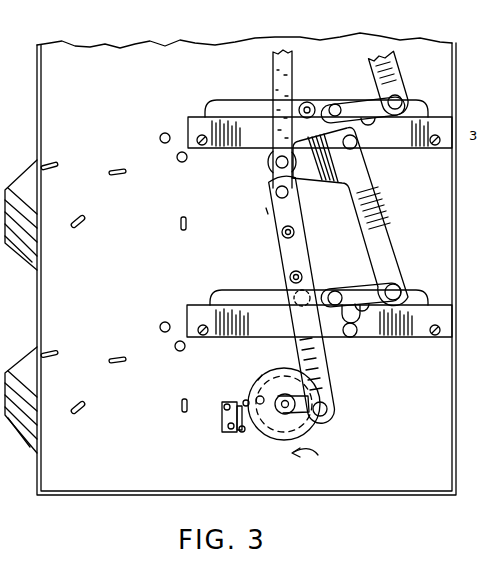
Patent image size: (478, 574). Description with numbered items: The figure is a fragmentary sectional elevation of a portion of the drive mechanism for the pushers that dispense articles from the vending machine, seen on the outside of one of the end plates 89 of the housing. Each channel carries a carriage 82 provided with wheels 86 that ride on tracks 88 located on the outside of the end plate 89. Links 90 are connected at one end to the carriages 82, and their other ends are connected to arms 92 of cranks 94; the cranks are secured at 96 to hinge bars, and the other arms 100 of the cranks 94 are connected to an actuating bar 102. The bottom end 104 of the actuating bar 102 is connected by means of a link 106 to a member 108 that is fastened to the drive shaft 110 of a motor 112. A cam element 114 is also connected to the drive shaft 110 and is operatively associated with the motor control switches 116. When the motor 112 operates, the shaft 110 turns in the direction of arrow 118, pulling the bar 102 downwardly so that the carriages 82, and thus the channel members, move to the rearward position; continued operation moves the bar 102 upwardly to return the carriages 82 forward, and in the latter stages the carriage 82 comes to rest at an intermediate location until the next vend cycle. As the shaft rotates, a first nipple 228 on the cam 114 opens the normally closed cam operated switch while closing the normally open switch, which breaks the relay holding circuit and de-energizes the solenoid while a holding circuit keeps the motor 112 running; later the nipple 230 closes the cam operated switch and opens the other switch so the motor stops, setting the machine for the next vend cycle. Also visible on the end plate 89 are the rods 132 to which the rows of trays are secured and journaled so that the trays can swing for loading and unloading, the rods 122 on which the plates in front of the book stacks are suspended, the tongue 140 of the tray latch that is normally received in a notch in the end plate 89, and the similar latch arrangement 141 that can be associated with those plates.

The end plate 89 is at (117, 63).
The actuating bar 102 is at (281, 62).
The carriage 82 is at (351, 177).
The wheel 86 is at (307, 102).
The link 90 is at (356, 98).
The crank securing point 96 is at (358, 138).
The crank 94 is at (357, 217).
The crank arm 92 is at (387, 247).
The other crank arm 100 is at (317, 170).
The bottom end of actuating bar 104 is at (270, 211).
The link 106 is at (278, 252).
The track 88 is at (198, 119).
The rod 132 is at (164, 133).
The rod 122 is at (177, 157).
The tongue 140 is at (83, 216).
The latch arrangement 141 is at (182, 216).
The nipple 230 is at (265, 402).
The first nipple 228 is at (267, 428).
The member 108 is at (285, 395).
The drive shaft 110 is at (283, 409).
The cam element 114 is at (257, 393).
The motor 112 is at (243, 401).
The motor control switches 116 is at (223, 415).
The arrow 118 is at (318, 456).